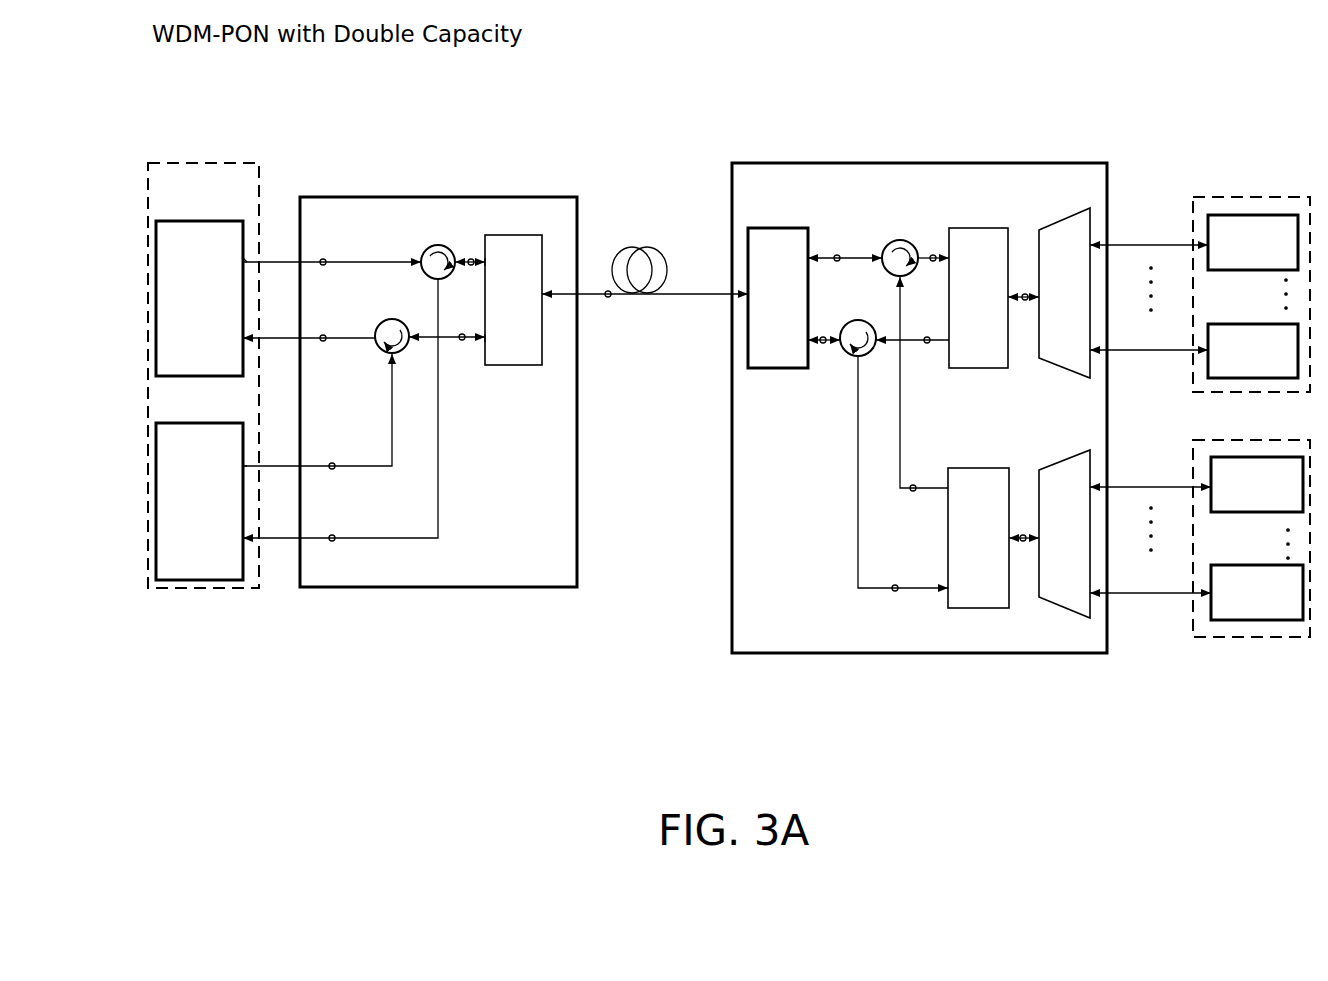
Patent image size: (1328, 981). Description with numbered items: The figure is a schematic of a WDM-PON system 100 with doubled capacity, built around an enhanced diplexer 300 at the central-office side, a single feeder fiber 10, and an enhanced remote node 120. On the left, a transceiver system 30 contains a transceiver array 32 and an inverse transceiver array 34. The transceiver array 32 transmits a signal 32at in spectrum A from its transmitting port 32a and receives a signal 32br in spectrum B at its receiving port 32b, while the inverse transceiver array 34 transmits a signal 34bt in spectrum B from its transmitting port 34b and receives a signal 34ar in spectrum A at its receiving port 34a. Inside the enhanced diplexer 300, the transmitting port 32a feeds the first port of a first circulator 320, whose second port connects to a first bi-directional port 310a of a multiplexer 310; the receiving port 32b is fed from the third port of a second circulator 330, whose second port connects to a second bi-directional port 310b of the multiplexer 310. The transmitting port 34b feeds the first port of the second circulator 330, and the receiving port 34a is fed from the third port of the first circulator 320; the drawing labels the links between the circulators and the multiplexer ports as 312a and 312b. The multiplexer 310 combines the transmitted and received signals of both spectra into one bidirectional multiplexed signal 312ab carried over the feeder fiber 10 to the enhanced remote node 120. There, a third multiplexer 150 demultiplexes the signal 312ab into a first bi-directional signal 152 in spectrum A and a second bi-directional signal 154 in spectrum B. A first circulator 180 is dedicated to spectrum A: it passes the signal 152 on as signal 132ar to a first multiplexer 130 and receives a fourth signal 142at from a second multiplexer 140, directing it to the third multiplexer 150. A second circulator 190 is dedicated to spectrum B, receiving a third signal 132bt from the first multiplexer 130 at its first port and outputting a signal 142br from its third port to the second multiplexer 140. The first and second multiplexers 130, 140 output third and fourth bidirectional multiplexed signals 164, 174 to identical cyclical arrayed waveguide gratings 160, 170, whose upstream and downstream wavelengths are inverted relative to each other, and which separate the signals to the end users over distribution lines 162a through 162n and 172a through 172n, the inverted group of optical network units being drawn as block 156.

The WDM-PON system 100 is at (616, 105).
The transceiver system 30 is at (194, 163).
The transceiver array 32 is at (182, 221).
The inverse transceiver array 34 is at (182, 423).
The transmitting port 32a is at (246, 260).
The receiving port 32b is at (247, 344).
The receiving port 34a is at (247, 540).
The transmitting port 34b is at (245, 466).
The first signal 32at is at (323, 265).
The third signal 32br is at (323, 341).
The second signal 34bt is at (332, 463).
The fourth signal 34ar is at (332, 535).
The enhanced diplexer 300 is at (531, 197).
The multiplexer 310 is at (486, 365).
The first bi-directional port 310a is at (487, 238).
The second bi-directional port 310b is at (482, 346).
The fiber between circulator 320 and port 310a 312a is at (471, 259).
The fiber between circulator 330 and port 310b 312b is at (462, 343).
The multiplexed signal 312ab is at (608, 298).
The first circulator 320 is at (438, 245).
The second circulator 330 is at (392, 319).
The feeder fiber 10 is at (680, 297).
The enhanced remote node 120 is at (1045, 163).
The third multiplexer 150 is at (793, 228).
The first multiplexer 130 is at (958, 228).
The second multiplexer 140 is at (955, 470).
The first bi-directional signal 152 is at (837, 255).
The second bi-directional signal 154 is at (823, 343).
The first circulator 180 is at (883, 243).
The second circulator 190 is at (858, 320).
The first signal 132ar is at (933, 255).
The third signal 132bt is at (927, 343).
The fourth signal 142at is at (913, 491).
The second signal 142br is at (895, 585).
The third bidirectional multiplexed signal 164 is at (1025, 300).
The fourth bidirectional multiplexed signal 174 is at (1023, 542).
The first arrayed waveguide grating 160 is at (1047, 363).
The second arrayed waveguide grating 170 is at (1040, 470).
The distribution fiber to ONU1 162a is at (1118, 244).
The distribution fiber to ONU32 162n is at (1118, 349).
The distribution fiber to ONU1 (INV) 172a is at (1118, 486).
The distribution fiber to ONU32 (INV) 172n is at (1118, 592).
The inverted ONU group 156 is at (1222, 440).